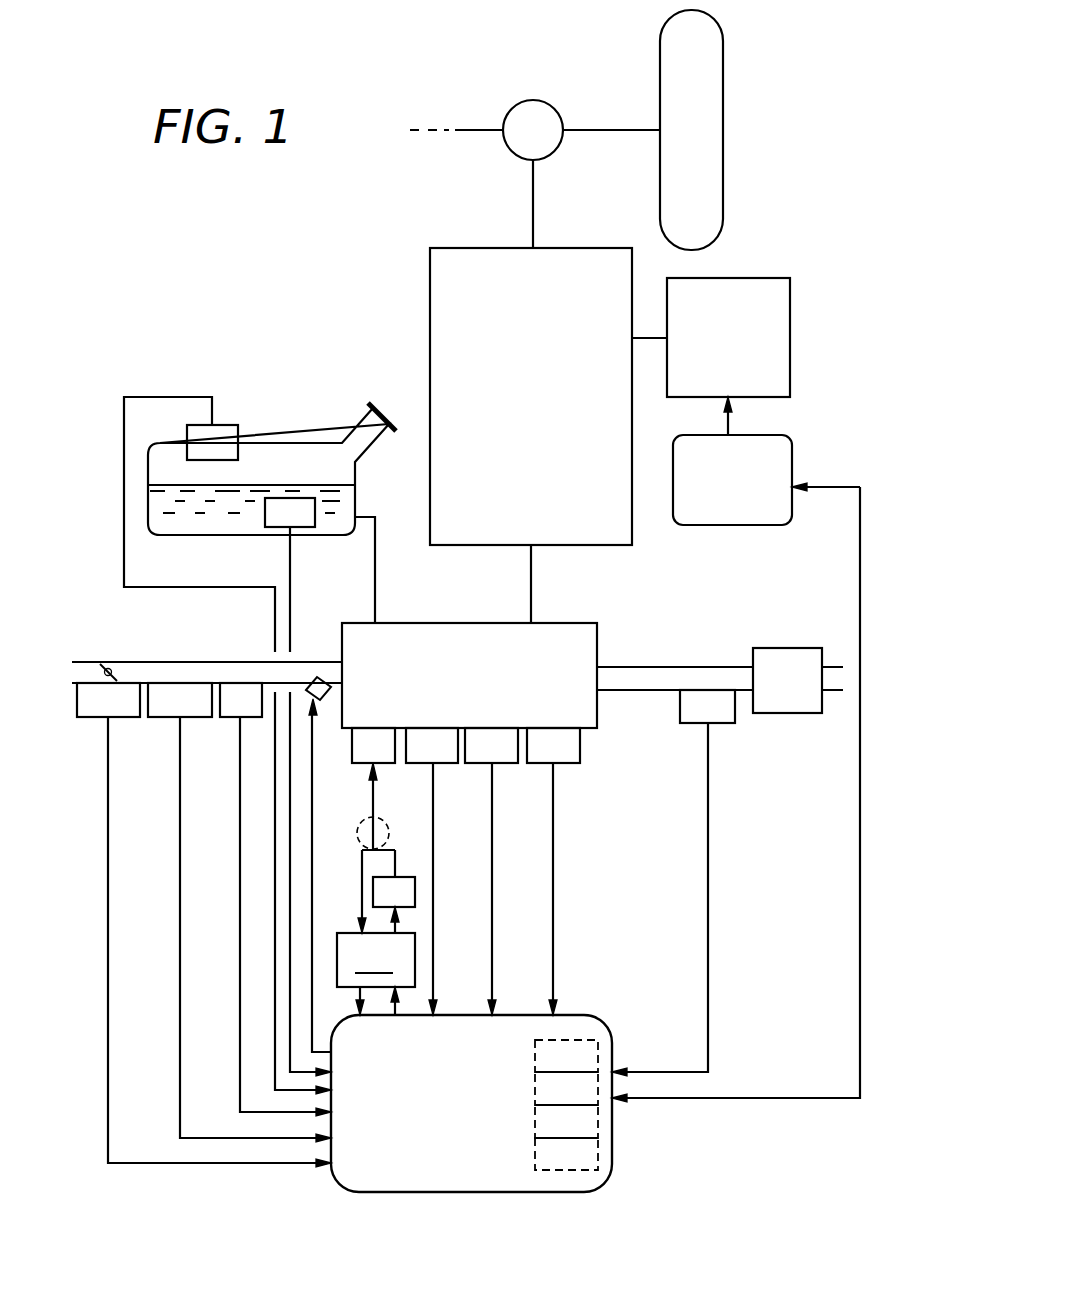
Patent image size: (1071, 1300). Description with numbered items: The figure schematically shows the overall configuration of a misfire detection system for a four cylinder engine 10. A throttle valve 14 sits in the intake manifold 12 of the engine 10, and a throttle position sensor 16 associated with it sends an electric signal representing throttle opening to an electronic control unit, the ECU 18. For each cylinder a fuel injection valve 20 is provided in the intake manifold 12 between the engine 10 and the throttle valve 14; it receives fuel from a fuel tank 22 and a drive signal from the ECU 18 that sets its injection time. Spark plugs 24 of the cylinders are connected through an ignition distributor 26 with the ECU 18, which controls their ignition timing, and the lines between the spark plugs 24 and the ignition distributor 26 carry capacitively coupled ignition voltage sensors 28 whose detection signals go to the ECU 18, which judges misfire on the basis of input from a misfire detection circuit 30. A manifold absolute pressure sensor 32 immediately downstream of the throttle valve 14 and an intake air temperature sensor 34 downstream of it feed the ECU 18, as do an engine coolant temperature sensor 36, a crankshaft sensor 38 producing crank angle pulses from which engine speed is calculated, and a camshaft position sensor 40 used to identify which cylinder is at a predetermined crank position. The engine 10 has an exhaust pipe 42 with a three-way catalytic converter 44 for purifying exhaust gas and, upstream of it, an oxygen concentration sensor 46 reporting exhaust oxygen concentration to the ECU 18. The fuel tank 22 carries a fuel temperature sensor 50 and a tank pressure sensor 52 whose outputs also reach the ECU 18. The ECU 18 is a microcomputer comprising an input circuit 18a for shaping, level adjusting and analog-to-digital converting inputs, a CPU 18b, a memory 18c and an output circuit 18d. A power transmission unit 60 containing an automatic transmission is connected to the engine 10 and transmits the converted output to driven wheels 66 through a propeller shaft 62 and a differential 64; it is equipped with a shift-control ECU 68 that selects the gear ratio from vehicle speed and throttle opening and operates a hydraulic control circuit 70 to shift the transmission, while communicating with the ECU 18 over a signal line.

The engine 10 is at (598, 710).
The intake manifold 12 is at (190, 662).
The throttle valve 14 is at (113, 663).
The throttle position sensor 16 is at (125, 717).
The electronic control unit (ECU) 18 is at (518, 1095).
The input circuit 18a is at (598, 1047).
The CPU 18b is at (588, 1092).
The memory 18c is at (588, 1125).
The output circuit 18d is at (572, 1165).
The fuel injection valve 20 is at (320, 676).
The fuel tank 22 is at (292, 450).
The spark plug 24 is at (360, 763).
The ignition distributor 26 is at (408, 877).
The ignition voltage sensor 28 is at (358, 840).
The misfire detection circuit 30 is at (376, 974).
The manifold absolute pressure sensor 32 is at (205, 717).
The intake air temperature sensor 34 is at (235, 717).
The engine coolant temperature sensor 36 is at (448, 763).
The crankshaft sensor 38 is at (510, 763).
The camshaft position sensor 40 is at (573, 763).
The exhaust pipe 42 is at (697, 665).
The three-way catalytic converter 44 is at (785, 648).
The oxygen concentration sensor 46 is at (725, 718).
The fuel temperature sensor 50 is at (308, 520).
The tank pressure sensor 52 is at (225, 427).
The power transmission unit 60 is at (468, 248).
The propeller shaft 62 is at (533, 195).
The differential 64 is at (545, 104).
The driven wheels 66 is at (718, 62).
The shift-control ECU 68 is at (792, 453).
The hydraulic control circuit 70 is at (765, 278).